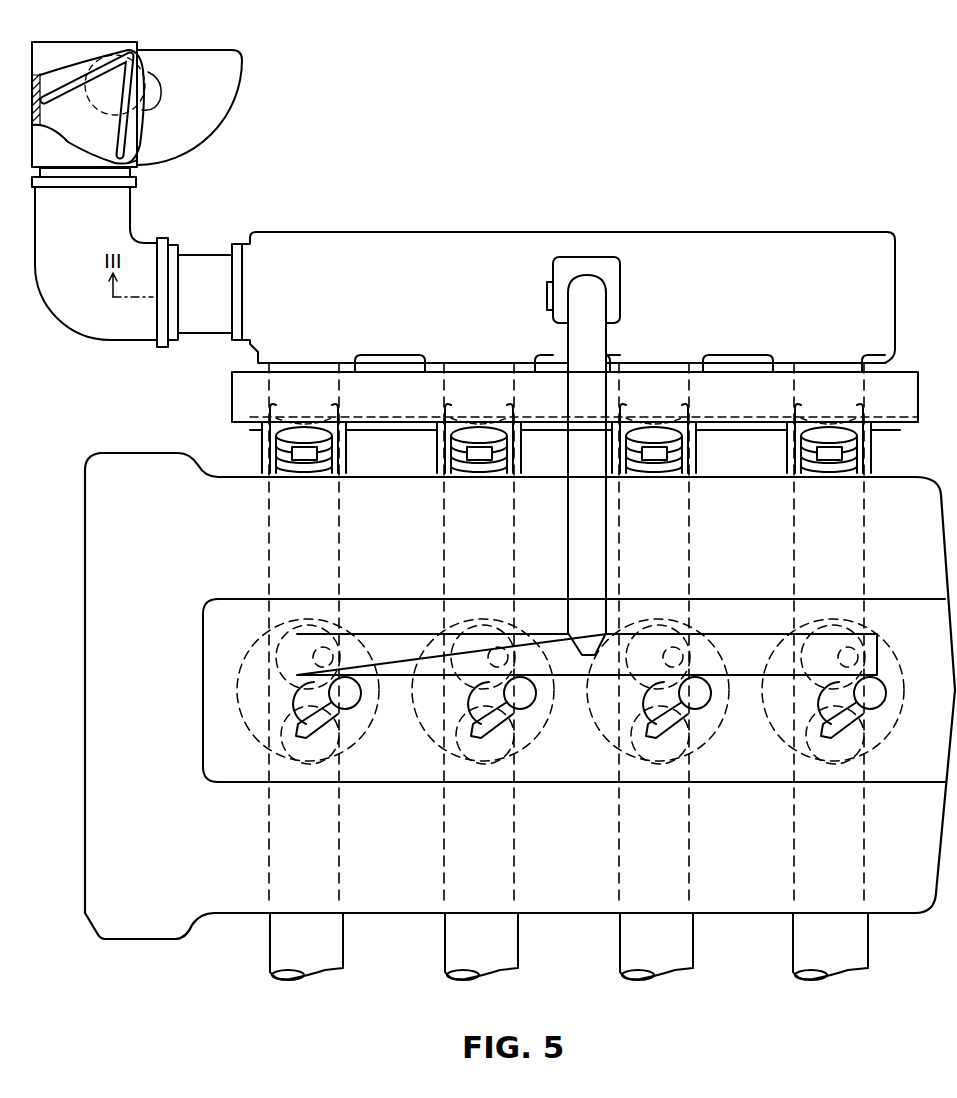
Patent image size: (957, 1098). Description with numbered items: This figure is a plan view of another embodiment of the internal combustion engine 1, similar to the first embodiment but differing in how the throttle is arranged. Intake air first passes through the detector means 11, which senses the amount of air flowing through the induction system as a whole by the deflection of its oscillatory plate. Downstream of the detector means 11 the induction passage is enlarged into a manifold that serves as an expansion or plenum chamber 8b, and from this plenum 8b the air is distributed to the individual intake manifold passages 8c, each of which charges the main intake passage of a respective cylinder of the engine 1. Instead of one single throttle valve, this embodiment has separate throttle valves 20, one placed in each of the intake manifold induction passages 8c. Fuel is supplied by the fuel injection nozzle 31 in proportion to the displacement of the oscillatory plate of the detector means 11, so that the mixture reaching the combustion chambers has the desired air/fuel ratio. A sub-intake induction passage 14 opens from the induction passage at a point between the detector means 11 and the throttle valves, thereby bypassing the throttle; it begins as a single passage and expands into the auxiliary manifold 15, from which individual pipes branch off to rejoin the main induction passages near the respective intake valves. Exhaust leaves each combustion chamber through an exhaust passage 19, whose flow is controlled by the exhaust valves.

The internal combustion engine 1 is at (100, 720).
The plenum 8b is at (652, 240).
The intake manifold passage 8c is at (268, 534).
The detector means 11 is at (205, 20).
The sub-intake induction passage 14 is at (568, 527).
The auxiliary manifold 15 is at (560, 617).
The exhaust passage 19 is at (272, 948).
The throttle valve 20 is at (320, 424).
The fuel injection nozzle 31 is at (468, 476).